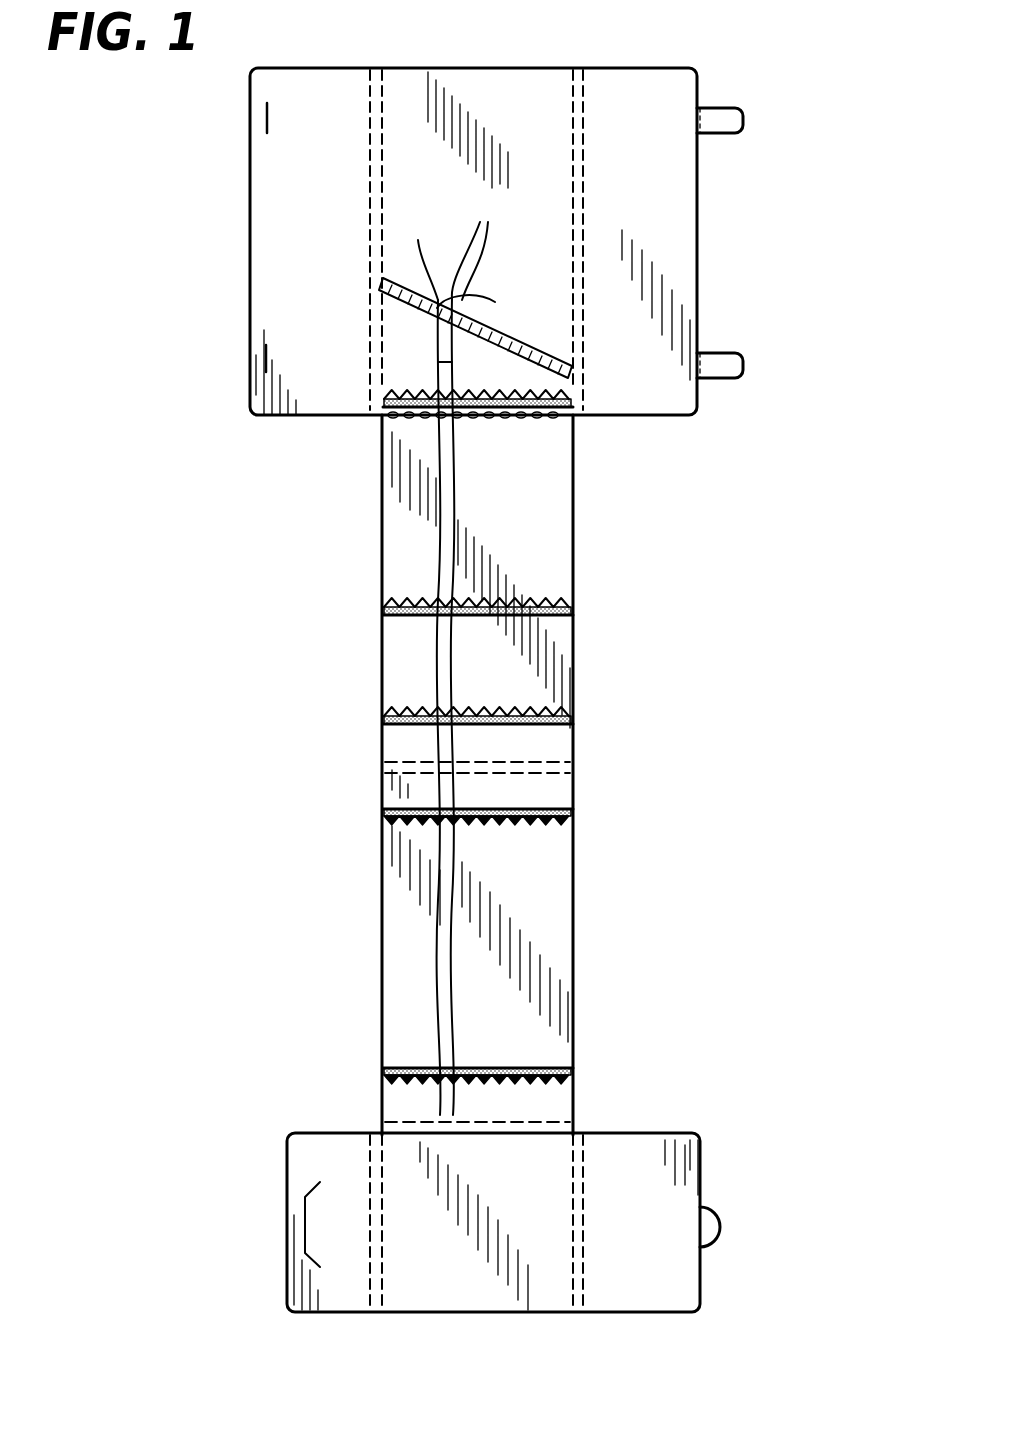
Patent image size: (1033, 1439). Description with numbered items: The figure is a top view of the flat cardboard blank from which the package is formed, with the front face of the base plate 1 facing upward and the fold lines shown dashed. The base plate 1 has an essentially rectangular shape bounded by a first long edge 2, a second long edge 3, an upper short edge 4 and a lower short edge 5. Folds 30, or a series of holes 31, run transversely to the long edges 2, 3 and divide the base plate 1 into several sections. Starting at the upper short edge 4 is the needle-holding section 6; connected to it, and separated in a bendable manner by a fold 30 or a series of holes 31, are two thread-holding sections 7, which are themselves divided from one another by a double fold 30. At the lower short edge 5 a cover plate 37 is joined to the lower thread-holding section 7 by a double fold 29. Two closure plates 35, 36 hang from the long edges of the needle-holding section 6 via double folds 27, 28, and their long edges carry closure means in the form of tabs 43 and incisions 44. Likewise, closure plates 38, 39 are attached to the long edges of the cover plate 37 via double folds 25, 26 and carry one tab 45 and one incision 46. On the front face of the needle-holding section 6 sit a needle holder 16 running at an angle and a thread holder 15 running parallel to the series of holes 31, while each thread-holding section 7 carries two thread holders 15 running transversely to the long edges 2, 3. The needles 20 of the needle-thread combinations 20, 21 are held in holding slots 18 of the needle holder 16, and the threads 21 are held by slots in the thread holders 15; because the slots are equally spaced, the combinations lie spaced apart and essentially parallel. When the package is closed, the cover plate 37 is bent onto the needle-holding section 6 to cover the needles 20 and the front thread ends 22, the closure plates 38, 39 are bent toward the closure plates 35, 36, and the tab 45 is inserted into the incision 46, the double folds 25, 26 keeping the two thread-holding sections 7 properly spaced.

The base plate 1 is at (665, 508).
The first long edge 2 is at (575, 540).
The second long edge 3 is at (378, 548).
The upper short edge 4 is at (470, 68).
The lower short edge 5 is at (400, 1135).
The needle-holding section 6 is at (515, 97).
The thread-holding section 7 is at (398, 562).
The thread holder 15 is at (545, 395).
The needle holder 16 is at (512, 335).
The holding slot 18 is at (419, 255).
The needle 20 is at (477, 247).
The thread 21 is at (440, 487).
The front thread end 22 is at (455, 357).
The double fold 25 is at (370, 1262).
The double fold 26 is at (585, 1247).
The double fold 27 is at (370, 232).
The double fold 28 is at (578, 230).
The double fold 29 is at (558, 1125).
The fold 30 is at (390, 422).
The series of holes 31 is at (555, 418).
The closure plate 35 is at (325, 107).
The closure plate 36 is at (630, 112).
The cover plate 37 is at (470, 1228).
The closure plate 38 is at (335, 1163).
The closure plate 39 is at (650, 1223).
The tab 43 is at (735, 128).
The incision 44 is at (266, 122).
The tab 45 is at (720, 1215).
The incision 46 is at (305, 1205).